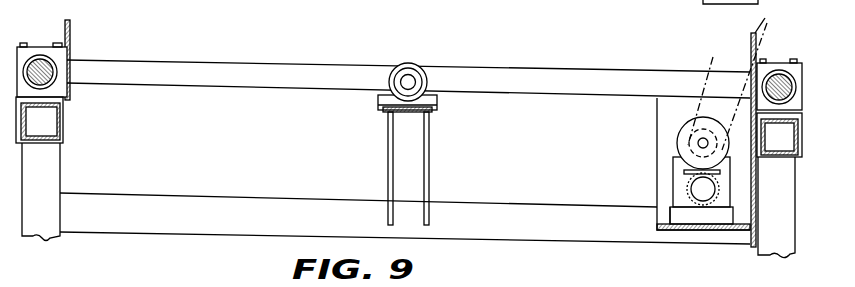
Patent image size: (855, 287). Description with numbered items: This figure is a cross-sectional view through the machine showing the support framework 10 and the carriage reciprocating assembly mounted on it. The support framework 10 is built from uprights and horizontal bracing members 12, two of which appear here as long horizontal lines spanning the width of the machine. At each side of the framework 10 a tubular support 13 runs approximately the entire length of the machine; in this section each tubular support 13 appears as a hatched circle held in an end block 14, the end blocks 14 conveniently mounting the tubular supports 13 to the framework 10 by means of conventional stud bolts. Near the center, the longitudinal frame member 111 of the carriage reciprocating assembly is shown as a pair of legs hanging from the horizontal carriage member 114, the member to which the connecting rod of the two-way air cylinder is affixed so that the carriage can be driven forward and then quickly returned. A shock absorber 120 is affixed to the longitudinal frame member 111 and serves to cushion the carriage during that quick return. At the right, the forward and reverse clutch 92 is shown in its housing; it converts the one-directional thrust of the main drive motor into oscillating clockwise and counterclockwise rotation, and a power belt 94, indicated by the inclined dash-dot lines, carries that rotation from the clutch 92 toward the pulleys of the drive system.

The support framework 10 is at (802, 198).
The horizontal bracing members 12 is at (598, 236).
The tubular support 13 is at (46, 70).
The end blocks 14 is at (30, 54).
The forward and reverse clutch 92 is at (704, 231).
The power belt 94 is at (713, 57).
The longitudinal frame member 111 is at (430, 116).
The horizontal carriage member 114 is at (526, 93).
The shock absorber 120 is at (413, 66).